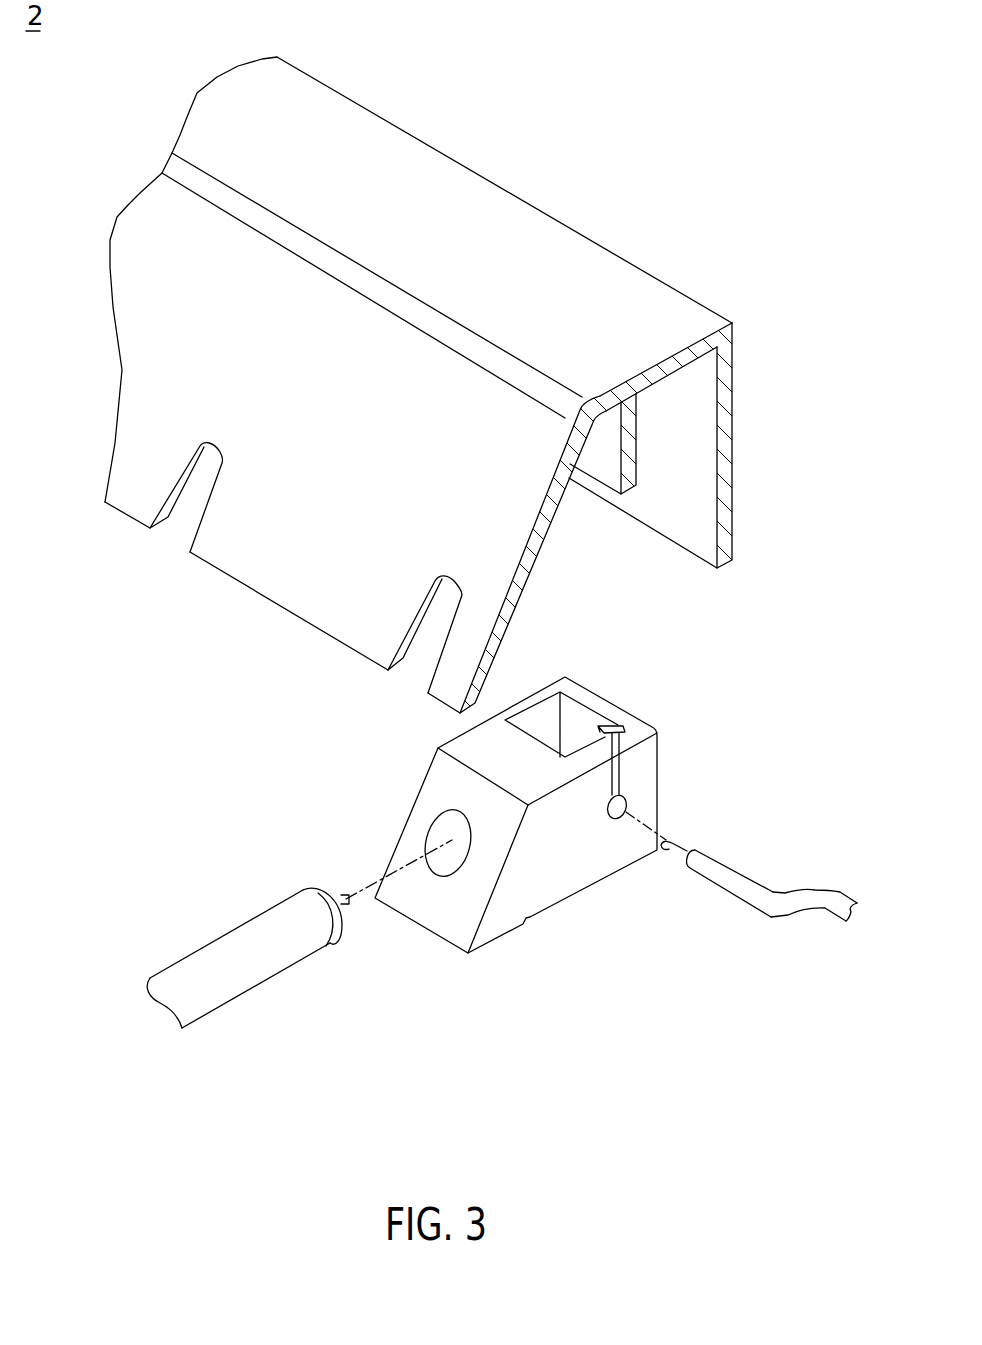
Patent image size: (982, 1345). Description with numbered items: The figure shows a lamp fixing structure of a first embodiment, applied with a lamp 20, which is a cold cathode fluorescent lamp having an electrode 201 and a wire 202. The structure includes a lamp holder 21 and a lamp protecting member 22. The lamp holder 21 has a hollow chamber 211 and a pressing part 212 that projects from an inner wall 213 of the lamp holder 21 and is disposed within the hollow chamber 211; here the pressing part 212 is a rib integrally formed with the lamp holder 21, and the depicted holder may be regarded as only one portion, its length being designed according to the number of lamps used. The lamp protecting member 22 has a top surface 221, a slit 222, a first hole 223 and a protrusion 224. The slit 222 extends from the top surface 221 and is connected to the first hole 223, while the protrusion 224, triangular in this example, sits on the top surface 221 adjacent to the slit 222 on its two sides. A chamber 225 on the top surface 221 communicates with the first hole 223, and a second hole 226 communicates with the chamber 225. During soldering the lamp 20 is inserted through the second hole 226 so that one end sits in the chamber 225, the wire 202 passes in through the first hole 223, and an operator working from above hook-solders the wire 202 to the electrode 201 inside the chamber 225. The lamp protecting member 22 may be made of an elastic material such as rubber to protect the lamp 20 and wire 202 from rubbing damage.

The lamp 20 is at (203, 997).
The electrode 201 is at (340, 899).
The wire 202 is at (797, 900).
The lamp holder 21 is at (530, 182).
The hollow chamber 211 is at (628, 545).
The pressing part 212 is at (632, 462).
The inner wall 213 is at (683, 375).
The lamp protecting member 22 is at (553, 920).
The top surface 221 is at (453, 750).
The slit 222 is at (631, 762).
The first hole 223 is at (634, 807).
The protrusion 224 is at (603, 726).
The chamber 225 is at (549, 690).
The second hole 226 is at (438, 866).